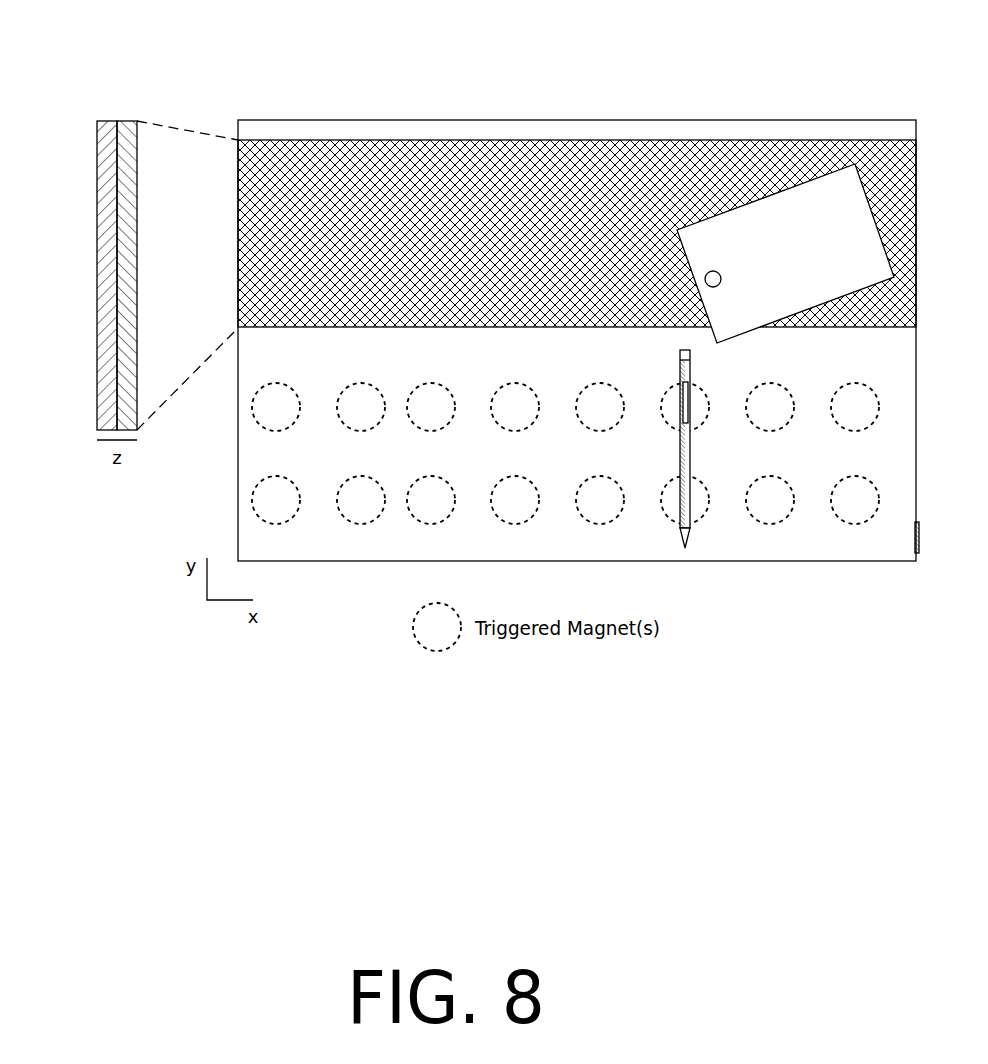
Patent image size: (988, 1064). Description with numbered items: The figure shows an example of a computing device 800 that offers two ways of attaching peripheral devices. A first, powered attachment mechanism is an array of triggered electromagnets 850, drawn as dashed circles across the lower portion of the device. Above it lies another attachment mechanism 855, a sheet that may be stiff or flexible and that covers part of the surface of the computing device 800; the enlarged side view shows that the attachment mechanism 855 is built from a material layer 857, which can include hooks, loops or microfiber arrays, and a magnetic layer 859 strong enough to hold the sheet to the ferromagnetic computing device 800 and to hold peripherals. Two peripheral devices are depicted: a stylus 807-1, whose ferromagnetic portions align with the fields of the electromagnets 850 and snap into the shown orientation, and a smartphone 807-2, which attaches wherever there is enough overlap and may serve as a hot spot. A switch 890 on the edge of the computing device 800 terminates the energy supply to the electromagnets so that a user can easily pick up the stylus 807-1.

The computing device 800 is at (685, 98).
The array of triggered electromagnets 850 is at (567, 369).
The attachment mechanism 855 is at (567, 229).
The material layer 857 is at (110, 121).
The magnetic layer 859 is at (125, 121).
The peripheral device 807-1 is at (685, 448).
The peripheral device 807-2 is at (733, 327).
The switch 890 is at (914, 537).